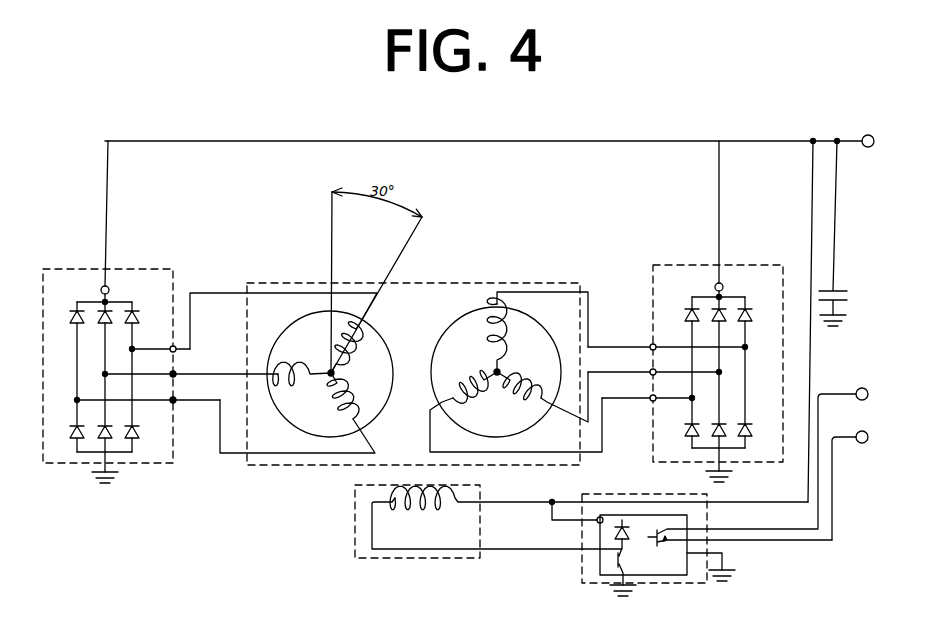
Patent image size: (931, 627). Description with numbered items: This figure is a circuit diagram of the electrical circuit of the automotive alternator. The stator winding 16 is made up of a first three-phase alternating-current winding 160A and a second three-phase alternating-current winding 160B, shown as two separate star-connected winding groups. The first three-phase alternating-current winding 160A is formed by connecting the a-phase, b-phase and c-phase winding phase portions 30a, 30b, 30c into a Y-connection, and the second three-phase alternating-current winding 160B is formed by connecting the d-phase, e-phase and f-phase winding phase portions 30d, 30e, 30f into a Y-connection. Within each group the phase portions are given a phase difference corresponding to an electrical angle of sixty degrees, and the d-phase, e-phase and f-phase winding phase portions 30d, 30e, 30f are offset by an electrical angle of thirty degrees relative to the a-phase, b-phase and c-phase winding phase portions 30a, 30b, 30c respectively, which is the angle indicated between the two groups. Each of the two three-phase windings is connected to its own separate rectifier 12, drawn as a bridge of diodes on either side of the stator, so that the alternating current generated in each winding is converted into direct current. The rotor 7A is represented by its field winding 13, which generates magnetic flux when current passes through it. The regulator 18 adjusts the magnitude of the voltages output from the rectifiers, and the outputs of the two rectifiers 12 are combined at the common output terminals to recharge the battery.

The rectifier 12 is at (156, 268).
The stator winding 16 is at (485, 281).
The first three-phase alternating-current winding 160A is at (547, 340).
The second three-phase alternating-current winding 160B is at (312, 433).
The a-phase winding phase portion 30a is at (516, 333).
The b-phase winding phase portion 30b is at (518, 411).
The c-phase winding phase portion 30c is at (469, 405).
The d-phase winding phase portion 30d is at (366, 344).
The e-phase winding phase portion 30e is at (368, 394).
The f-phase winding phase portion 30f is at (291, 388).
The rotor 7A is at (569, 544).
The field winding 13 is at (427, 518).
The regulator 18 is at (580, 568).